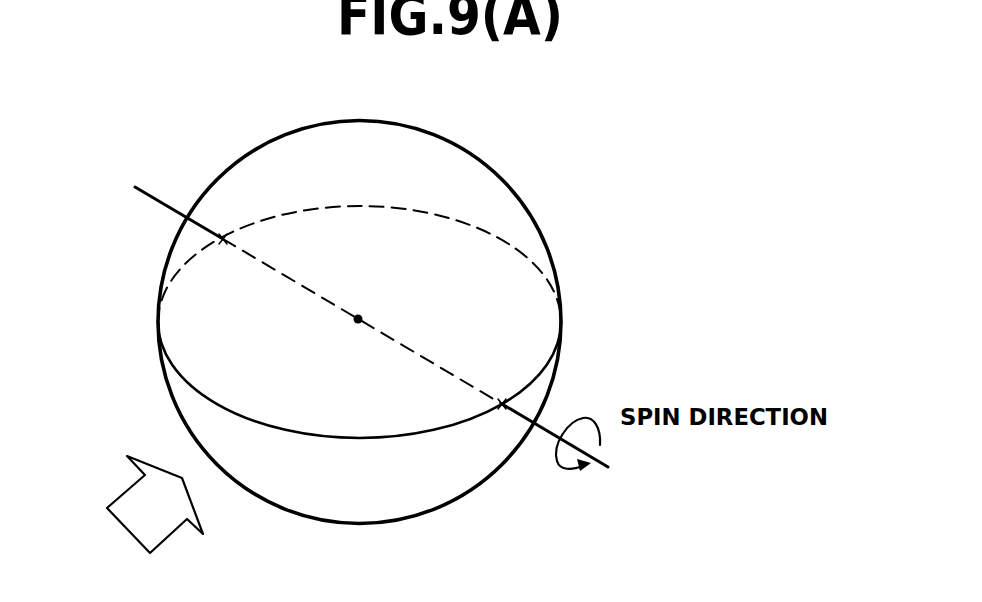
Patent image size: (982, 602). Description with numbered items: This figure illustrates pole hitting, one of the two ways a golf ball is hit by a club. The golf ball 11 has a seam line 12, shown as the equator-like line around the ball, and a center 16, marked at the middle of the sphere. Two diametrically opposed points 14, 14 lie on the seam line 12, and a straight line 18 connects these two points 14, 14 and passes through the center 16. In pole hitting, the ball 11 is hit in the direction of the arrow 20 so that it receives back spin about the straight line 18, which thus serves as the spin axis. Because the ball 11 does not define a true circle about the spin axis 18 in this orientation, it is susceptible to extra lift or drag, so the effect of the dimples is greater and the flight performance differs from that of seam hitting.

The golf ball 11 is at (527, 220).
The seam line 12 is at (450, 428).
The diametrically opposed points 14 is at (223, 238).
The center 16 is at (362, 316).
The straight line 18 is at (158, 200).
The arrow 20 is at (139, 509).